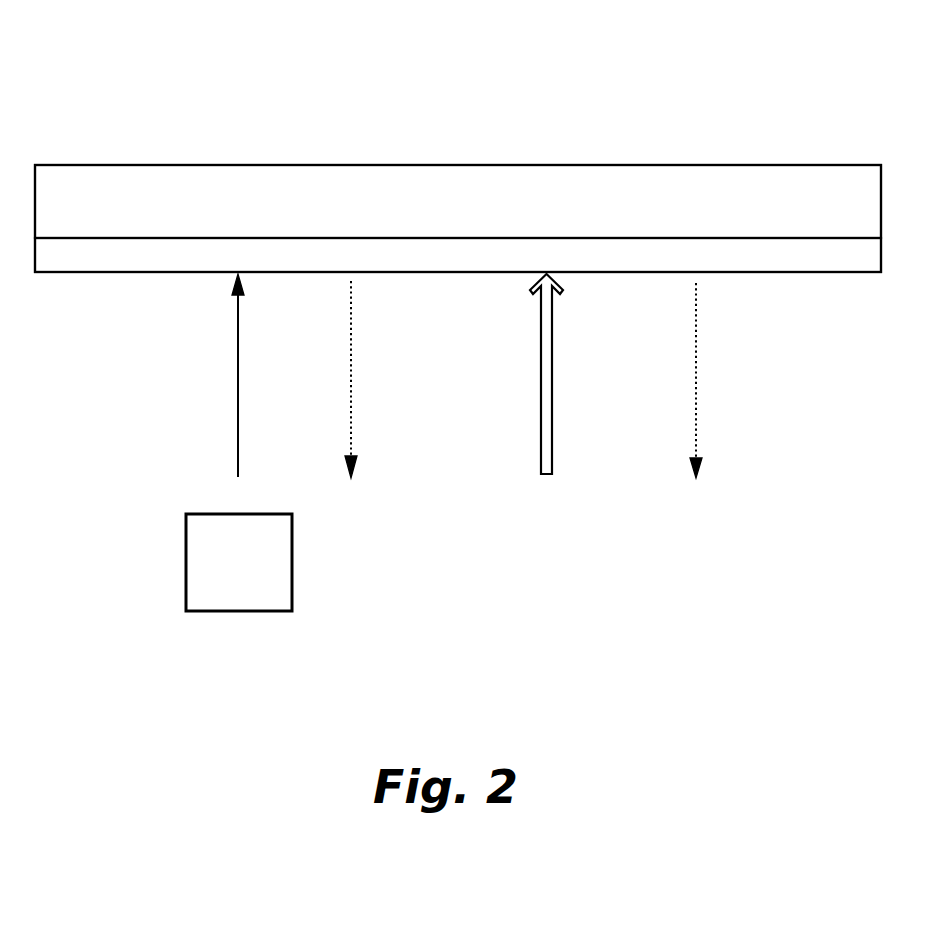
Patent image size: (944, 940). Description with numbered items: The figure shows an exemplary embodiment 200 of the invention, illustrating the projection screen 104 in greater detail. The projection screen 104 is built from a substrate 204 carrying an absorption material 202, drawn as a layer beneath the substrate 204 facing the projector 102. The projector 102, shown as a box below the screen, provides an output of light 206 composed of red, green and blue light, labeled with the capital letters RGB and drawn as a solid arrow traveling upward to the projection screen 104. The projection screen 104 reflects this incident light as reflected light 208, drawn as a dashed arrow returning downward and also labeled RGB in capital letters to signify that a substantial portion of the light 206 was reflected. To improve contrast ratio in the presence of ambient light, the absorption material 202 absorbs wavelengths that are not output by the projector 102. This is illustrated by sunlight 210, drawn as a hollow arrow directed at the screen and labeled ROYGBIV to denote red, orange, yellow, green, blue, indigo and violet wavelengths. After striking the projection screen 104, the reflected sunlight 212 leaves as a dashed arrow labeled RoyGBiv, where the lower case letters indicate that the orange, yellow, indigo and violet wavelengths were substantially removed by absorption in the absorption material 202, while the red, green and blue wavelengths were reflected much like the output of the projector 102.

The exemplary embodiment 200 is at (237, 43).
The projection screen 104 is at (238, 165).
The substrate 204 is at (458, 201).
The absorption material 202 is at (458, 255).
The light 206 is at (236, 436).
The reflected light 208 is at (352, 438).
The sunlight 210 is at (540, 338).
The reflected sunlight 212 is at (697, 344).
The projector 102 is at (239, 562).